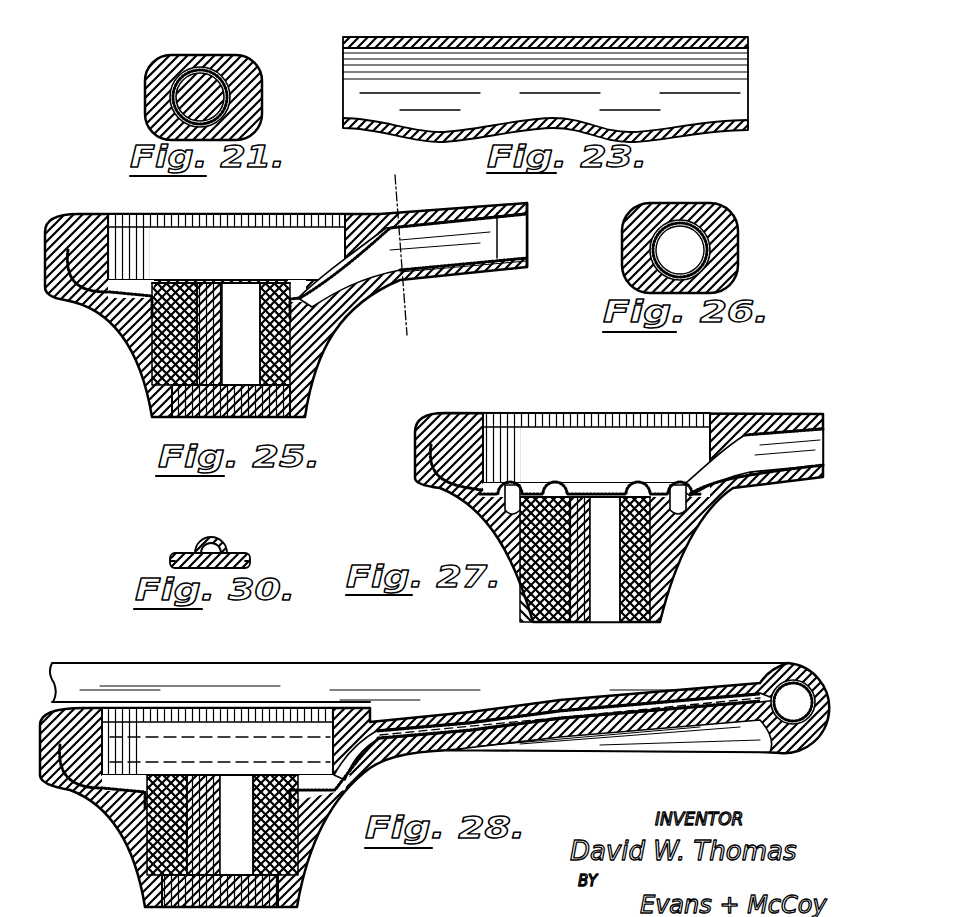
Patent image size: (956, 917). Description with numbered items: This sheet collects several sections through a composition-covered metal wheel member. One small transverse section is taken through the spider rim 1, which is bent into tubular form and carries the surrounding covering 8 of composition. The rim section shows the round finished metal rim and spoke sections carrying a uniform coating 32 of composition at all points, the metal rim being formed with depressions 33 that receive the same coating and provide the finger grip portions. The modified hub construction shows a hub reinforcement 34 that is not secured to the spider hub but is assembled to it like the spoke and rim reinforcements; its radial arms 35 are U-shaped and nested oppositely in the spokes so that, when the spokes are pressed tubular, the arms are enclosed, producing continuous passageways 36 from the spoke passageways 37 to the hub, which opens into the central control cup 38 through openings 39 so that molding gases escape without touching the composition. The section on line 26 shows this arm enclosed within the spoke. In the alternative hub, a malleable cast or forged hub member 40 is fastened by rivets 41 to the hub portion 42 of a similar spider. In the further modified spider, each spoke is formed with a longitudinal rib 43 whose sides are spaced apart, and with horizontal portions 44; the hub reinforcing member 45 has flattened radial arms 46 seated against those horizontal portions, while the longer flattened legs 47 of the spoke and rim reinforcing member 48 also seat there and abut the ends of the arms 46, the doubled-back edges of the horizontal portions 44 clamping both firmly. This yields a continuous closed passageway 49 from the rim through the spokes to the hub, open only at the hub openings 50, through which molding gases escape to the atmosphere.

In FIG. 21, the rim 1 is at (205, 62).
In FIG. 21, the handle covering 8 is at (262, 97).
In FIG. 23, the uniform coating 32 is at (560, 40).
In FIG. 23, the depressions 33 is at (575, 118).
In FIG. 25, the hub reinforcement 34 is at (330, 340).
In FIG. 25, the radial arms 35 is at (470, 280).
In FIG. 26, the radial arms 35 is at (680, 254).
In FIG. 25, the continuous passageways 36 is at (412, 260).
In FIG. 26, the continuous passageways 36 is at (705, 218).
In FIG. 25, the spoke passageways 37 is at (517, 237).
In FIG. 26, the spoke passageways 37 is at (738, 236).
In FIG. 25, the central control cup 38 is at (226, 247).
In FIG. 25, the openings 39 is at (337, 280).
In FIG. 25, the section line 26— 26 is at (410, 176).
In FIG. 27, the hub member 40 is at (672, 596).
In FIG. 27, the rivets 41 is at (690, 510).
In FIG. 27, the hub portion 42 is at (660, 490).
In FIG. 30, the longitudinal rib 43 is at (215, 548).
In FIG. 30, the horizontal portions 44 is at (172, 556).
In FIG. 30, the legs 47 is at (236, 570).
In FIG. 28, the legs 47 is at (645, 700).
In FIG. 28, the hub reinforcing member 45 is at (363, 780).
In FIG. 28, the radial arms 46 is at (463, 753).
In FIG. 28, the spoke and rim reinforcing member 48 is at (786, 682).
In FIG. 28, the continuous closed passageway 49 is at (557, 717).
In FIG. 28, the openings 50 is at (320, 770).